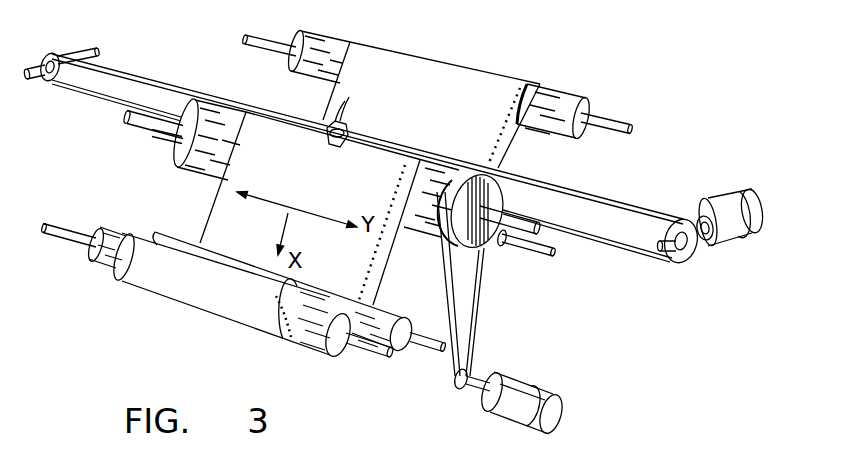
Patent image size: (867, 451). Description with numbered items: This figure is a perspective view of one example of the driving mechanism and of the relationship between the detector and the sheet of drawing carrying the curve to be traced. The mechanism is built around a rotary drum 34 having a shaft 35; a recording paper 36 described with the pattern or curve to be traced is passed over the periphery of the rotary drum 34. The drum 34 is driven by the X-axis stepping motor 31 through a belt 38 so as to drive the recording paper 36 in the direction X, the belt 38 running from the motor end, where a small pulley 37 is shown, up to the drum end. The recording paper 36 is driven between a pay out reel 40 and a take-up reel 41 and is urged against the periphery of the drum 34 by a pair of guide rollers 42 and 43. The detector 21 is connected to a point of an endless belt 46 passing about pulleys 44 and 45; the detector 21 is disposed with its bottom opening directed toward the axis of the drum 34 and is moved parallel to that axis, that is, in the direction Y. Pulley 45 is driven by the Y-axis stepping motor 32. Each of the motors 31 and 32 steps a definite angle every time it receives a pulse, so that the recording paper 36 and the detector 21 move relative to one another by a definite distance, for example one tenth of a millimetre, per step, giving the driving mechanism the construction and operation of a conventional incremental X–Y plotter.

The detector 21 is at (330, 124).
The X-axis stepping motor 31 is at (513, 378).
The Y-axis stepping motor 32 is at (720, 198).
The rotary drum 34 is at (500, 200).
The shaft 35 is at (133, 128).
The recording paper 36 is at (212, 197).
The pulley 37 is at (462, 392).
The belt 38 is at (443, 298).
The pay out reel 40 is at (563, 98).
The take-up reel 41 is at (312, 355).
The guide roller 42 is at (400, 352).
The guide roller 43 is at (500, 248).
The pulley 44 is at (52, 54).
The pulley 45 is at (686, 263).
The endless belt 46 is at (624, 206).